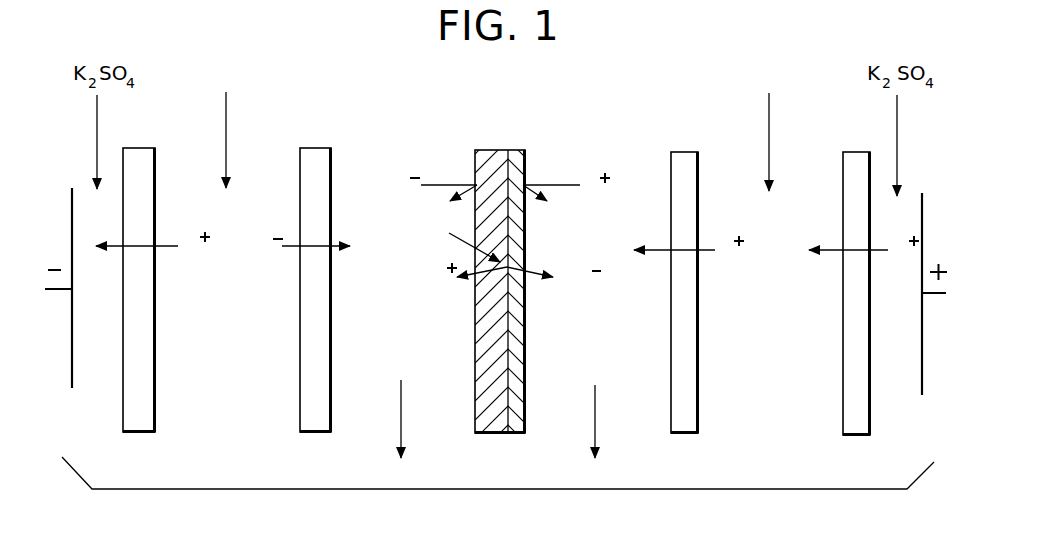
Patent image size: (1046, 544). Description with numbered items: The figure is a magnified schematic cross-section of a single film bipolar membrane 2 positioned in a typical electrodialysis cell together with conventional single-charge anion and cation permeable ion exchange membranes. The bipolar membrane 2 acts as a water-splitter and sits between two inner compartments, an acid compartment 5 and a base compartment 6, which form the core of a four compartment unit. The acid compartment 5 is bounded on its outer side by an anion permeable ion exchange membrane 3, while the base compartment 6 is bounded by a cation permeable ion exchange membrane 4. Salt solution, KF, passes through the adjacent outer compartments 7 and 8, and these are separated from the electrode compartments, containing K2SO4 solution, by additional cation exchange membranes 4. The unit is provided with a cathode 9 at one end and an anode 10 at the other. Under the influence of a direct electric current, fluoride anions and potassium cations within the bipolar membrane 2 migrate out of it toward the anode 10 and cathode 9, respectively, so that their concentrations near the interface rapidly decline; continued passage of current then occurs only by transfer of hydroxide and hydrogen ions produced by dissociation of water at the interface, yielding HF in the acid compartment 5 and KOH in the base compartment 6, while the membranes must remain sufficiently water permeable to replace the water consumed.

The bipolar membrane 2 is at (490, 435).
The anion permeable ion exchange membrane 3 is at (310, 425).
The cation permeable ion exchange membrane 4 is at (140, 425).
The acid compartment 5 is at (410, 349).
The base compartment 6 is at (617, 349).
The salt compartment 7 is at (232, 349).
The salt compartment 8 is at (779, 349).
The cathode 9 is at (73, 310).
The anode 10 is at (921, 312).